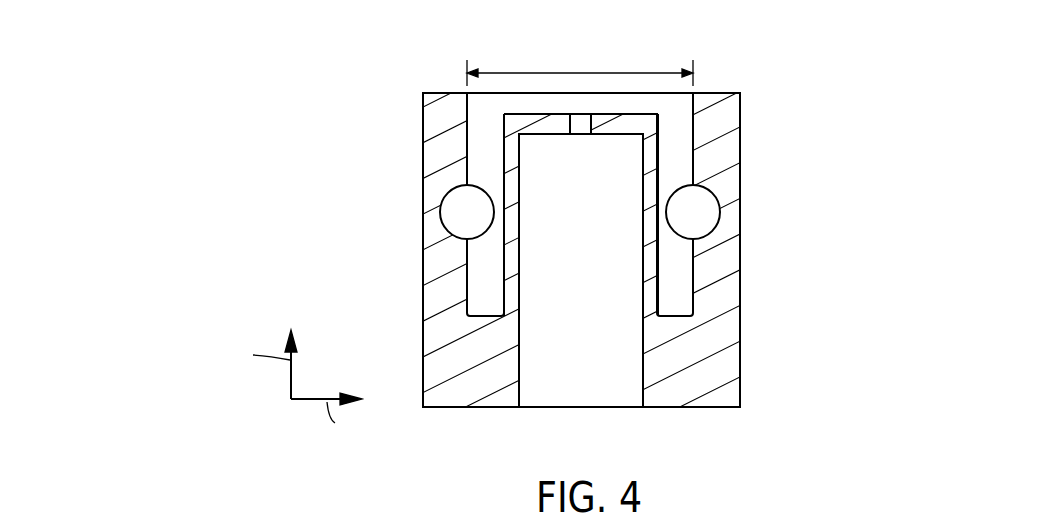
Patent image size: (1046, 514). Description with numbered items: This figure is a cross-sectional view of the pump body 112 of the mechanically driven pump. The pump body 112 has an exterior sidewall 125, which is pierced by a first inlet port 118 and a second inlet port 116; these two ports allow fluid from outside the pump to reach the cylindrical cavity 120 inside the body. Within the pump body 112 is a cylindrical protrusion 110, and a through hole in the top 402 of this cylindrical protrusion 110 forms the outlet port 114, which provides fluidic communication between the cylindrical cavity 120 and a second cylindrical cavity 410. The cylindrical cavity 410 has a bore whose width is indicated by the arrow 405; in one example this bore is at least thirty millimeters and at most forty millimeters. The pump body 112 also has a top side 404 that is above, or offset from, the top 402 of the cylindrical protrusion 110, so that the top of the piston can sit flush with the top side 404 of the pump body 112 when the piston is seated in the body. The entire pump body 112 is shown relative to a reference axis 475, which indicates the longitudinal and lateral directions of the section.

The pump body 112 is at (740, 338).
The cylindrical protrusion 110 is at (658, 135).
The outlet port 114 is at (582, 125).
The second inlet port 116 is at (695, 224).
The first inlet port 118 is at (462, 207).
The cylindrical cavity 120 is at (688, 168).
The exterior sidewall 125 is at (422, 124).
The top of cylindrical protrusion 402 is at (525, 112).
The top side of pump body 404 is at (712, 92).
The bore 405 is at (633, 72).
The cylindrical cavity 410 is at (612, 378).
The reference axis 475 is at (317, 347).